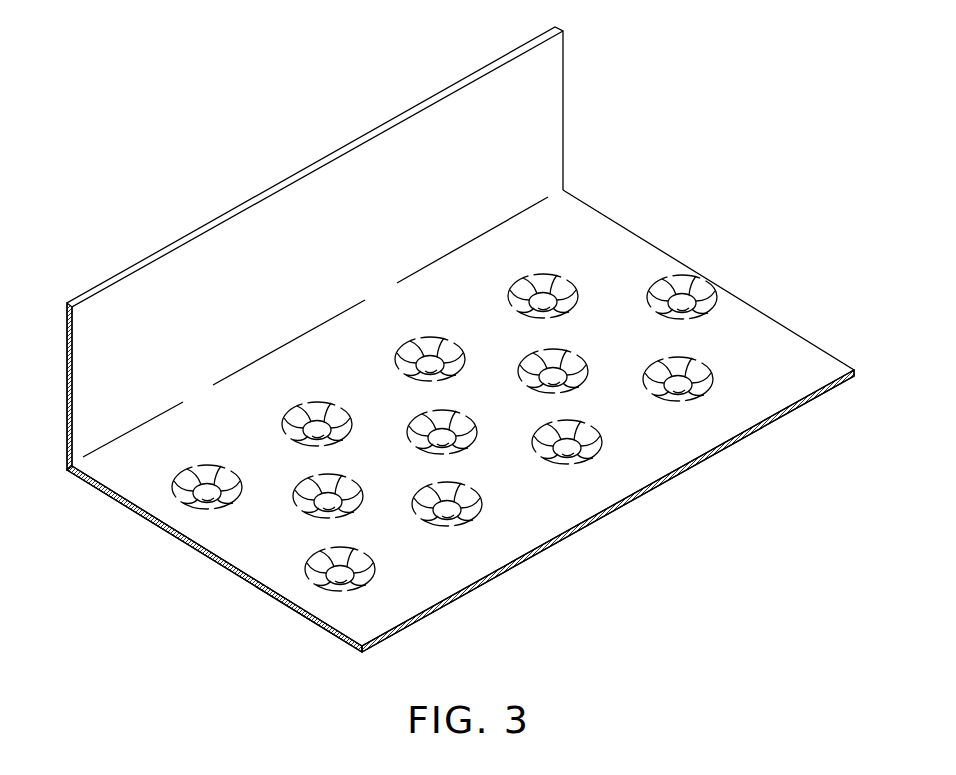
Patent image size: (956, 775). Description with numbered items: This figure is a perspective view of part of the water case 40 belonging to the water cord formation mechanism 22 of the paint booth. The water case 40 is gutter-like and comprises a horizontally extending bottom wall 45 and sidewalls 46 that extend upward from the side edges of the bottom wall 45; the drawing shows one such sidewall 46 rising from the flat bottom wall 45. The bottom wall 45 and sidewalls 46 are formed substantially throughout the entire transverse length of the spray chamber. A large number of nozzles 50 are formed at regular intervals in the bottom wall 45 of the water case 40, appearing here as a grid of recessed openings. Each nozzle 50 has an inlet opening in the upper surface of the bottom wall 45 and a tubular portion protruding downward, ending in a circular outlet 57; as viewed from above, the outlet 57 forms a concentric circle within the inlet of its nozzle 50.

The water cord formation mechanism 22 is at (460, 339).
The water case 40 is at (760, 308).
The bottom wall 45 is at (630, 255).
The sidewall 46 is at (550, 115).
The nozzle 50 is at (430, 341).
The outlet 57 is at (548, 312).